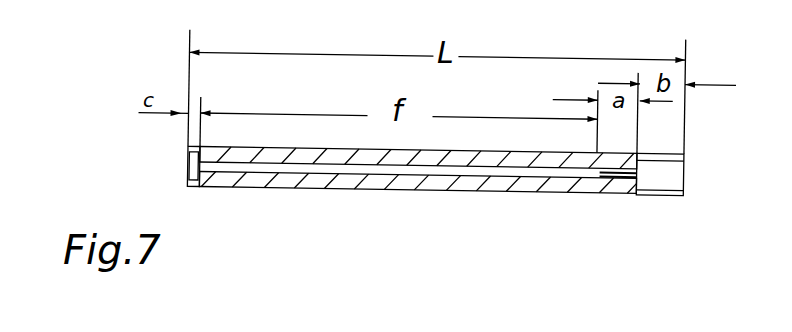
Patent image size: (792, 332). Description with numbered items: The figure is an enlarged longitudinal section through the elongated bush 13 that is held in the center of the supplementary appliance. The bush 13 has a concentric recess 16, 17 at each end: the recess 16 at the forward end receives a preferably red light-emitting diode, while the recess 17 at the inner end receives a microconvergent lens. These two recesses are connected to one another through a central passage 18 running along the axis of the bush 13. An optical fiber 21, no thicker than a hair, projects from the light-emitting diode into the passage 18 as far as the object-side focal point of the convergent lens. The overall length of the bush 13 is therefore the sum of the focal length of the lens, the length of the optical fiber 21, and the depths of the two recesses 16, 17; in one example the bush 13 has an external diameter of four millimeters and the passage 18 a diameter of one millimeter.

The bush 13 is at (413, 180).
The recess 16 is at (662, 177).
The recess 17 is at (188, 165).
The central passage 18 is at (320, 167).
The optical fiber 21 is at (617, 180).